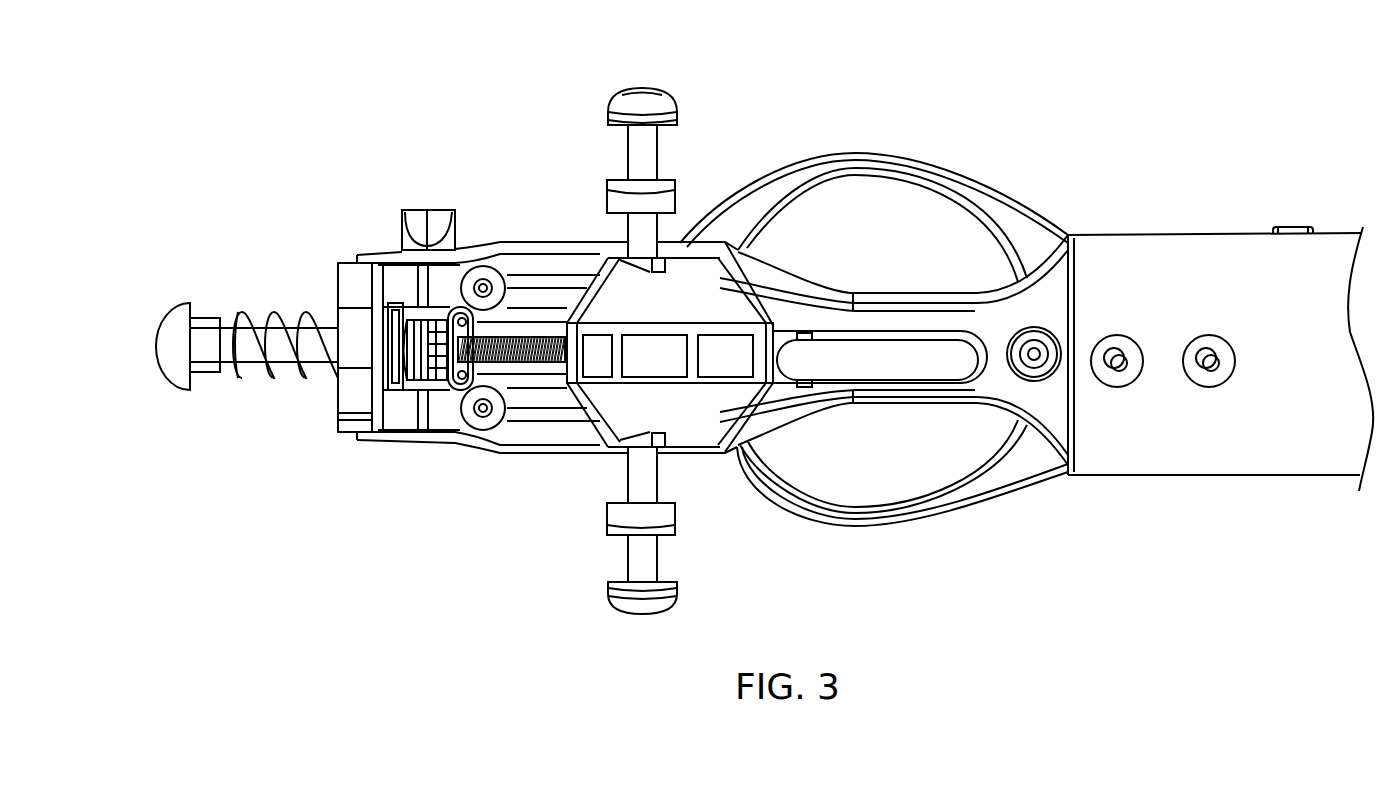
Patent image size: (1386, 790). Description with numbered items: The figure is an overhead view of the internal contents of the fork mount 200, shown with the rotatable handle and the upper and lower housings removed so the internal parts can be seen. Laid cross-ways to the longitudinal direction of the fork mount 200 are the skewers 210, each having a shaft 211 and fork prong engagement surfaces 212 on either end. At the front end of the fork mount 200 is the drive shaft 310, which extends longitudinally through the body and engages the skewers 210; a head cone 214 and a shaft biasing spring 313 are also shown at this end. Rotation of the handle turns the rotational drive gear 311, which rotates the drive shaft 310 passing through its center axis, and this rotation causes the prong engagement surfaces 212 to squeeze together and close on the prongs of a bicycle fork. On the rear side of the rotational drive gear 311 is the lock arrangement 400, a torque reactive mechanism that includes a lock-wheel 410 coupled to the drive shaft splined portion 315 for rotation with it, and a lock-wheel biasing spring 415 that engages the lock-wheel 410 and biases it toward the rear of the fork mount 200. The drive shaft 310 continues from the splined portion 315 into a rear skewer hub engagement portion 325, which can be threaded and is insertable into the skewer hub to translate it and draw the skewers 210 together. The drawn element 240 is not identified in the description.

The fork mount 200 is at (1208, 71).
The skewers 210 is at (644, 351).
The shaft 211 is at (660, 166).
The fork prong engagement surfaces 212 is at (622, 182).
The head cone 214 is at (178, 328).
The cup mount 240 is at (422, 210).
The drive shaft 310 is at (302, 342).
The rotational drive gear 311 is at (356, 300).
The shaft biasing spring 313 is at (306, 374).
The drive shaft splined portion 315 is at (432, 380).
The rear skewer hub engagement portion 325 is at (520, 355).
The lock arrangement 400 is at (466, 228).
The lock-wheel 410 is at (397, 318).
The lock-wheel biasing spring 415 is at (408, 378).